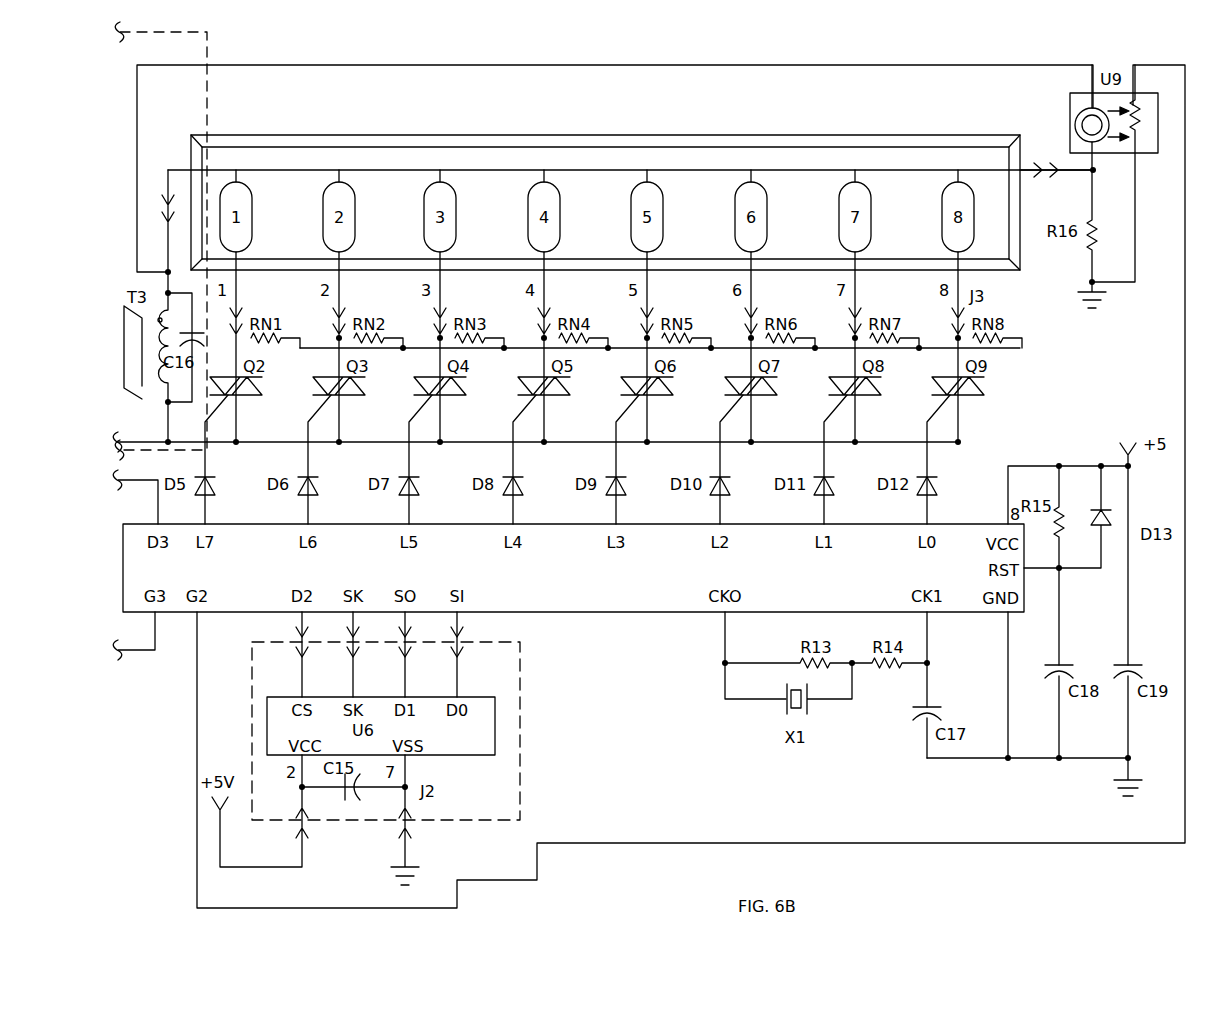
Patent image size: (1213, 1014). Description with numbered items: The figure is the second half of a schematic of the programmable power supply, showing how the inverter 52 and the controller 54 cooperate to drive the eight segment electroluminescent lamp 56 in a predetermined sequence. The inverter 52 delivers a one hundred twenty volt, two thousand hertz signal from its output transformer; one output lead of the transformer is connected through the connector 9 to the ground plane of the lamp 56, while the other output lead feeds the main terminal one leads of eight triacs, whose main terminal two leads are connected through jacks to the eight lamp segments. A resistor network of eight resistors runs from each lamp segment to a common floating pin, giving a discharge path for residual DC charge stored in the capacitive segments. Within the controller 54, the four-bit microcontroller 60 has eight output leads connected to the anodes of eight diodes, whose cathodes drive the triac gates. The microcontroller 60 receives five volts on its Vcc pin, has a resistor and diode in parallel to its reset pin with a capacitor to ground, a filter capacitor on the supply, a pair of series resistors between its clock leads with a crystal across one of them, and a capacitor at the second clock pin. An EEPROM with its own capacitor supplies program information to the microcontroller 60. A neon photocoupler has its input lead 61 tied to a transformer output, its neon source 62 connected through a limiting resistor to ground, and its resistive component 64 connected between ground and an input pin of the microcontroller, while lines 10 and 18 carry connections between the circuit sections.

The inverter 52 is at (207, 46).
The eight segment electroluminescent lamp 56 is at (478, 135).
The connector 9 is at (161, 221).
The line 10 is at (1058, 160).
The line 18 is at (135, 497).
The controller 54 is at (1050, 412).
The 4 bit microcontroller 60 is at (975, 524).
The input lead 61 is at (1082, 110).
The neon source 62 is at (1082, 125).
The resistive component 64 is at (1135, 110).